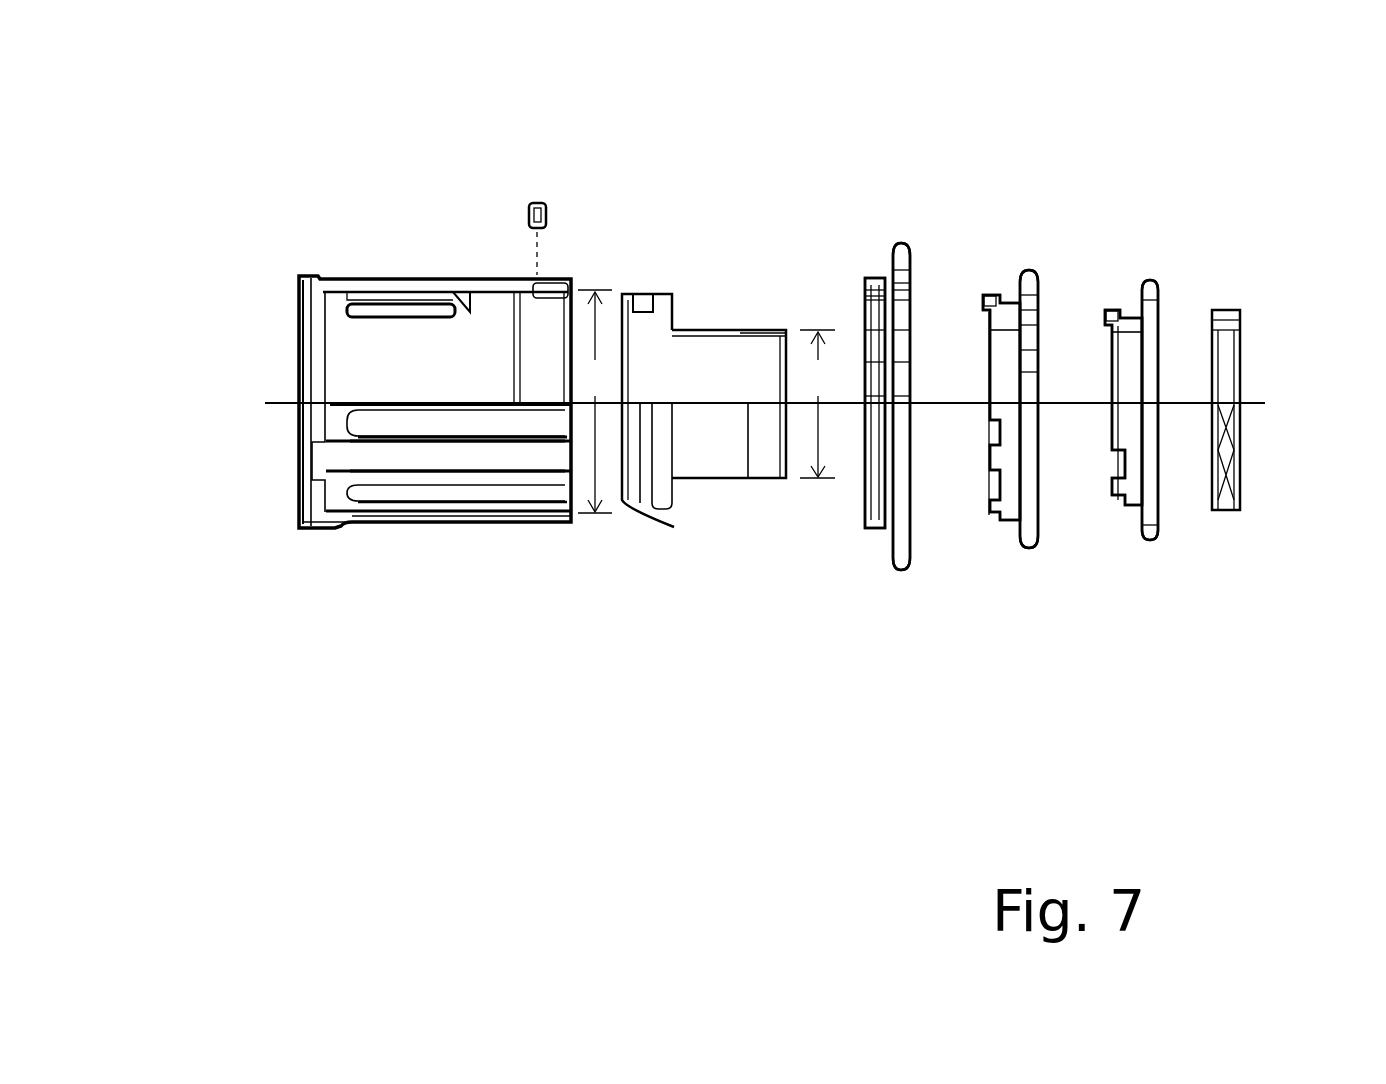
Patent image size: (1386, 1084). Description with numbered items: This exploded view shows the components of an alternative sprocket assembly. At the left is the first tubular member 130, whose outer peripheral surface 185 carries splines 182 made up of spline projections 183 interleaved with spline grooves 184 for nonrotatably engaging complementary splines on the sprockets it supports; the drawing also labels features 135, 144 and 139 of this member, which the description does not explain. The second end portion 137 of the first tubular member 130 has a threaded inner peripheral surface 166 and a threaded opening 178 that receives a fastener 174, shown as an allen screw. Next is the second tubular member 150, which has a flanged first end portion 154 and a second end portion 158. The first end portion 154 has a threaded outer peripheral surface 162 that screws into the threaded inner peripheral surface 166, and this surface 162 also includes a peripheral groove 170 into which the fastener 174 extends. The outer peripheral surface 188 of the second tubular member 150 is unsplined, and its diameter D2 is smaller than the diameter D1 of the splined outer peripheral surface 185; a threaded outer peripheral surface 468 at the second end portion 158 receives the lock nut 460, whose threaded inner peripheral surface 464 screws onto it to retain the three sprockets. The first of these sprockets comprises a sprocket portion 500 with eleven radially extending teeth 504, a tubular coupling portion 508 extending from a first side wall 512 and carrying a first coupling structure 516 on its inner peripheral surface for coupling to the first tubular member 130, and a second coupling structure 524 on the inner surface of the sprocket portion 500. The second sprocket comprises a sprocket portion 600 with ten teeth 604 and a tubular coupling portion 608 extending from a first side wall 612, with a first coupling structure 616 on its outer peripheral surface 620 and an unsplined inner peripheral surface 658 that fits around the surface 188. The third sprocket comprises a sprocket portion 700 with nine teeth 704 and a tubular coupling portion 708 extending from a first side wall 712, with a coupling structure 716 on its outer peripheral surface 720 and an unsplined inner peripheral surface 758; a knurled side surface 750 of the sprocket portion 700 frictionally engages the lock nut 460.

The first tubular member 130 is at (342, 290).
The flange 135 is at (297, 277).
The outer peripheral surface 185 is at (378, 290).
The groove 144 is at (345, 315).
The notch 139 is at (469, 308).
The threaded opening 178 is at (540, 288).
The fastener 174 is at (537, 202).
The threaded inner peripheral surface 166 is at (560, 302).
The splines 182 is at (351, 530).
The spline projections 183 is at (440, 512).
The spline grooves 184 is at (485, 512).
The second end portion 137 is at (548, 515).
The diameter D1 is at (601, 401).
The diameter D2 is at (821, 404).
The second tubular member 150 is at (697, 328).
The peripheral groove 170 is at (650, 292).
The outer peripheral surface 188 is at (730, 328).
The threaded outer peripheral surface 468 is at (777, 328).
The threaded outer peripheral surface 162 is at (662, 511).
The second end portion 158 is at (766, 480).
The first end portion 154 is at (645, 515).
The sprocket portion 500 is at (906, 602).
The tubular coupling portion 508 is at (888, 535).
The radially extending teeth 504 is at (907, 268).
The first side wall 512 is at (893, 268).
The first coupling structure 516 is at (853, 298).
The second coupling structure 524 is at (956, 268).
The sprocket portion 600 is at (1032, 572).
The tubular coupling portion 608 is at (1015, 522).
The radially extending teeth 604 is at (1034, 276).
The first side wall 612 is at (1022, 282).
The first coupling structure 616 is at (999, 290).
The outer peripheral surface 620 is at (1011, 298).
The unsplined inner peripheral surface 658 is at (1002, 332).
The sprocket portion 700 is at (1162, 550).
The tubular coupling portion 708 is at (1127, 508).
The radially extending teeth 704 is at (1158, 281).
The first side wall 712 is at (1147, 294).
The coupling structure 716 is at (1118, 320).
The outer peripheral surface 720 is at (1142, 296).
The unsplined inner peripheral surface 758 is at (1140, 322).
The knurled side surface 750 is at (1158, 527).
The lock nut 460 is at (1233, 310).
The threaded inner peripheral surface 464 is at (1303, 380).